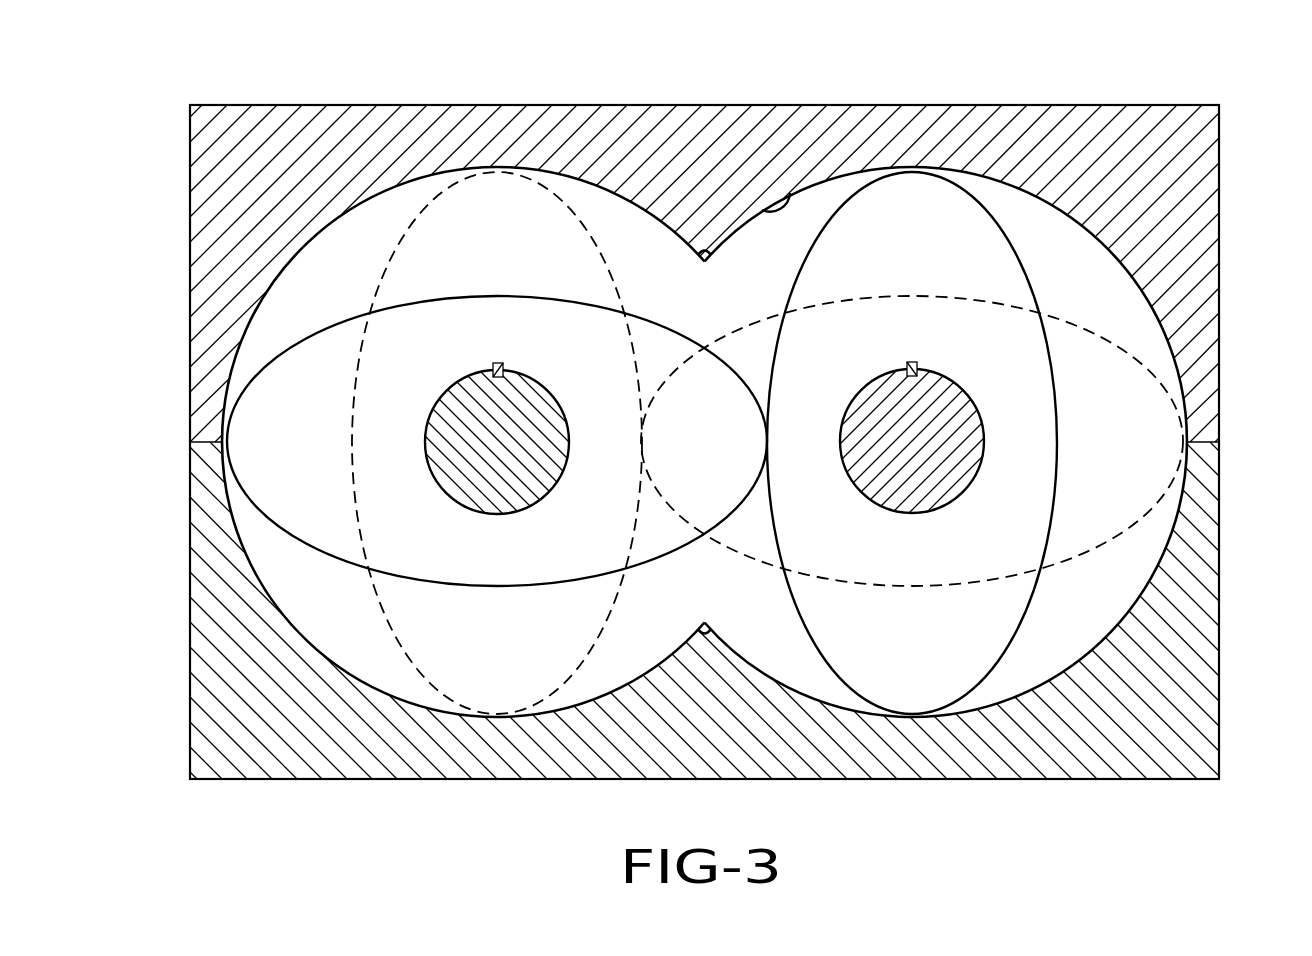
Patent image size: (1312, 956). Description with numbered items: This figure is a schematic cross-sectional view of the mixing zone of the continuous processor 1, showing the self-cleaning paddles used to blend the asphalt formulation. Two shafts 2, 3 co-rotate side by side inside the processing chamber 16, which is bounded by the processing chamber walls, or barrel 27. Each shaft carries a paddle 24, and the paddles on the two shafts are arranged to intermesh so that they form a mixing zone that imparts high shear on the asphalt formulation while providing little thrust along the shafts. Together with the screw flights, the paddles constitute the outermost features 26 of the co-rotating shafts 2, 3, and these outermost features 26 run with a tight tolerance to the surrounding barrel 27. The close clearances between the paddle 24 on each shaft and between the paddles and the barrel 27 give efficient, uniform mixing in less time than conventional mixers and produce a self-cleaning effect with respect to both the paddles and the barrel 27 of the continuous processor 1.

The continuous processor 1 is at (138, 160).
The shaft 2 is at (456, 372).
The shaft 3 is at (957, 377).
The processing chamber 16 is at (652, 235).
The paddle 24 is at (826, 215).
The outermost features 26 is at (457, 182).
The processing chamber walls (barrel) 27 is at (762, 210).